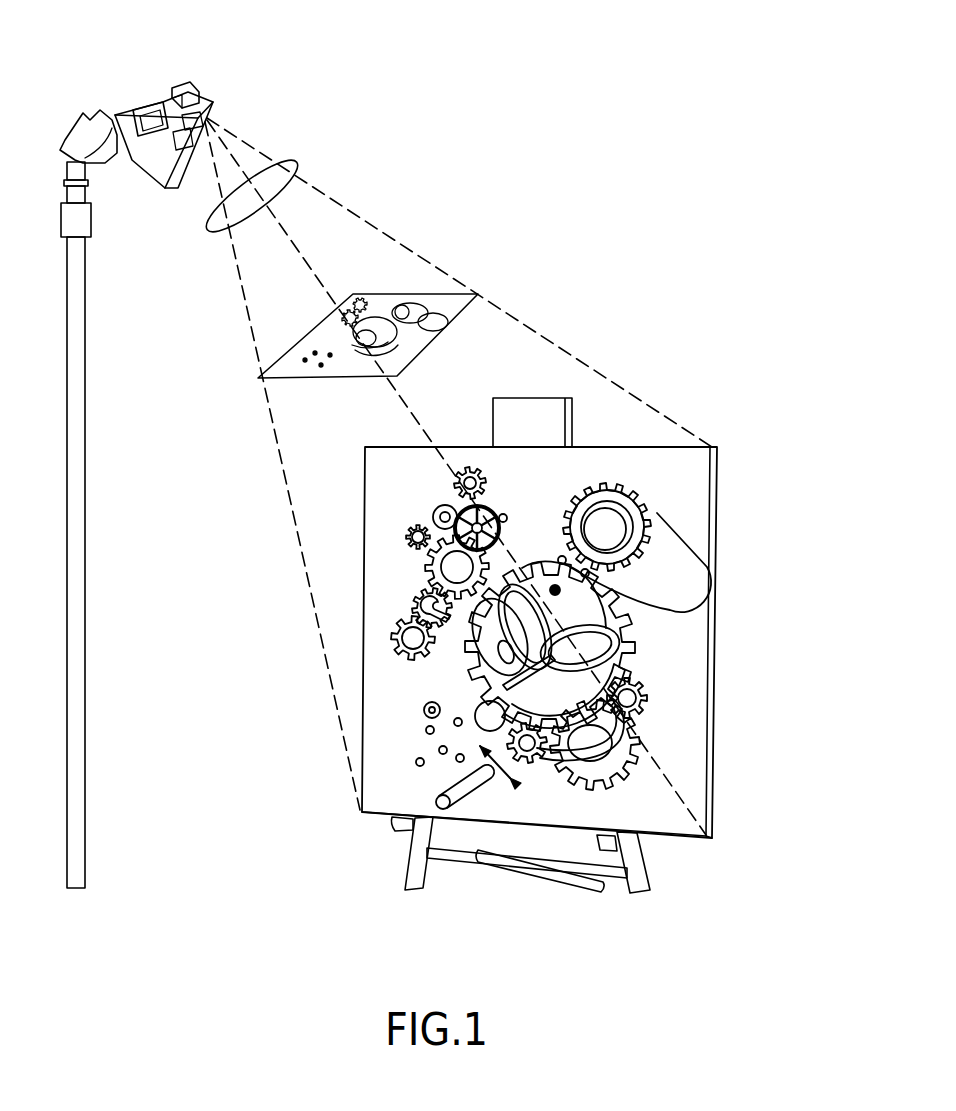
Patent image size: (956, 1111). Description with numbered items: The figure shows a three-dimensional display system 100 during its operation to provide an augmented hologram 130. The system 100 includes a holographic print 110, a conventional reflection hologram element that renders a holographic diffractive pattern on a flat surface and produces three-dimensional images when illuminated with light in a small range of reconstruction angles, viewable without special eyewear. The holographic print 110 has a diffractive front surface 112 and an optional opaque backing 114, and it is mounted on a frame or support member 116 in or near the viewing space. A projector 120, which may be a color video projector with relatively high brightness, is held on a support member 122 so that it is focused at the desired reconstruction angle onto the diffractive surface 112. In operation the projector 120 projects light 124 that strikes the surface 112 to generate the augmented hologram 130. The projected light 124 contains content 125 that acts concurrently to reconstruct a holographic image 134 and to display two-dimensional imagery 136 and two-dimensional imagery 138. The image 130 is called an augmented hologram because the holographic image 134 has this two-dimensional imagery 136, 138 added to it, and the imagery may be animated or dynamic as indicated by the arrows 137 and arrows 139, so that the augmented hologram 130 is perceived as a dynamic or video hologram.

The 3D display system 100 is at (578, 197).
The holographic print 110 is at (735, 585).
The diffractive front surface 112 is at (690, 740).
The opaque backing 114 is at (710, 820).
The frame or support member 116 is at (418, 878).
The projector 120 is at (247, 62).
The support member 122 is at (86, 345).
The projected light 124 is at (297, 163).
The content 125 is at (267, 373).
The augmented hologram 130 is at (473, 428).
The holographic image 134 is at (537, 567).
The 2D imagery 136 is at (432, 524).
The arrows 137 is at (460, 497).
The 2D imagery 138 is at (453, 783).
The arrows 139 is at (510, 778).